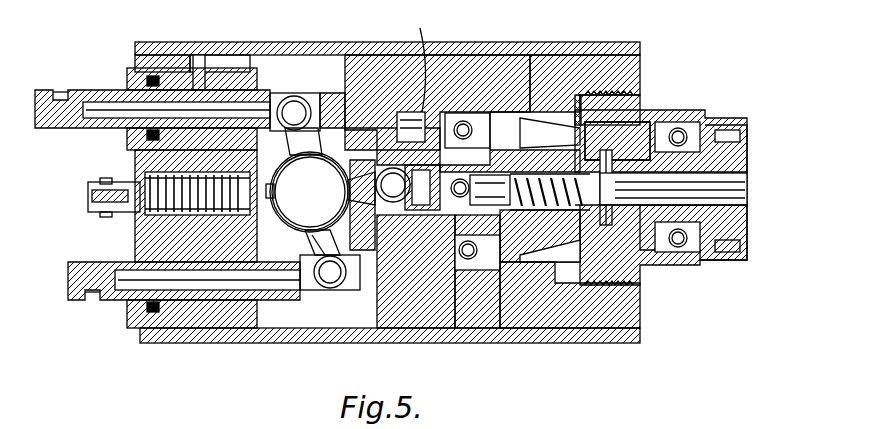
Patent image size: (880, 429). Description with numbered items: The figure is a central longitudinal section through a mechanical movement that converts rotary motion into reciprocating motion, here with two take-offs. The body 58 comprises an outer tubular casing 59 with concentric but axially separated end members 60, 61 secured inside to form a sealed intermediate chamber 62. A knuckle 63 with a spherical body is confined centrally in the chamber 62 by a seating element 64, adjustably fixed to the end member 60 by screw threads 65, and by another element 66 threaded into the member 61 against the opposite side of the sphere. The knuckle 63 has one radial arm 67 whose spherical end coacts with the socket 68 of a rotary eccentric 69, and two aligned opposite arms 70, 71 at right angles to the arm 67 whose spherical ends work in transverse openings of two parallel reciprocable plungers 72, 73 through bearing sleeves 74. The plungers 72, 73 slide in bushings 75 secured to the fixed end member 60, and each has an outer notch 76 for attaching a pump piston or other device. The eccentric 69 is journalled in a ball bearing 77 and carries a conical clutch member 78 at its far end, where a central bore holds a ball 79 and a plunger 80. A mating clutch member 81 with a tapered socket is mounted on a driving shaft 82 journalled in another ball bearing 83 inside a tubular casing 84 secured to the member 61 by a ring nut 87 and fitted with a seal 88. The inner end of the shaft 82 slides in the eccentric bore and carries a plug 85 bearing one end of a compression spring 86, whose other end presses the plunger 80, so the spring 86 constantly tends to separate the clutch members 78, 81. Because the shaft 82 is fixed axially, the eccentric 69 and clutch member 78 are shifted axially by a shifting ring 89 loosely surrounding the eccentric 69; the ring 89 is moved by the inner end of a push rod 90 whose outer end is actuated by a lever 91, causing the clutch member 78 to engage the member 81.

The body 58 is at (370, 48).
The outer tubular casing 59 is at (278, 48).
The end member 60 is at (152, 60).
The end member 61 is at (568, 62).
The intermediate chamber 62 is at (278, 335).
The motion converter or knuckle 63 is at (320, 191).
The seating element 64 is at (288, 178).
The screw threads 65 is at (150, 228).
The element 66 is at (368, 255).
The radial arm 67 is at (408, 187).
The socket 68 is at (380, 140).
The rotary eccentric 69 is at (412, 235).
The arm 70 is at (290, 110).
The arm 71 is at (325, 285).
The reciprocable plunger 72 is at (65, 122).
The reciprocable plunger 73 is at (72, 278).
The bearing sleeve 74 is at (312, 100).
The bushing 75 is at (138, 80).
The notch 76 is at (60, 98).
The ball bearing 77 is at (462, 118).
The clutch member 78 is at (545, 255).
The ball 79 is at (460, 200).
The plunger 80 is at (478, 262).
The clutch member 81 is at (555, 300).
The driving shaft 82 is at (640, 250).
The ball bearing 83 is at (680, 128).
The tubular casing 84 is at (712, 118).
The plug 85 is at (620, 190).
The compression spring 86 is at (540, 172).
The ring nut 87 is at (620, 100).
The seal 88 is at (592, 100).
The shifting ring 89 is at (417, 59).
The push rod 90 is at (95, 208).
The lever 91 is at (90, 190).